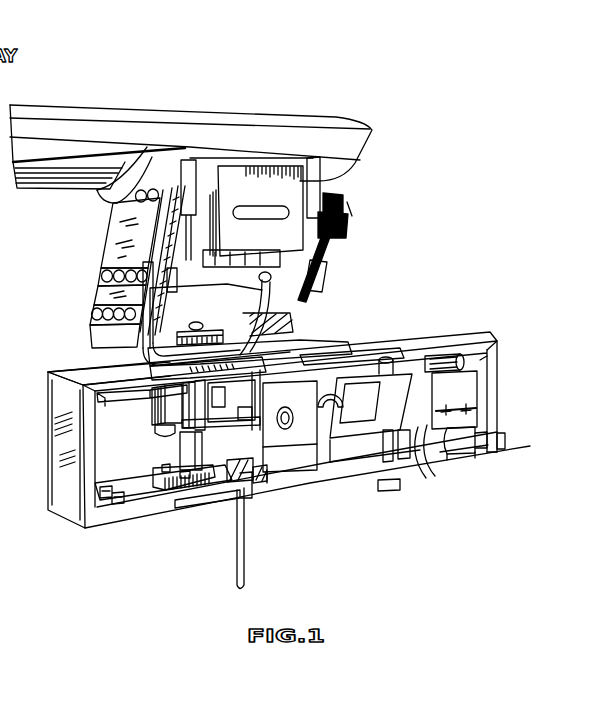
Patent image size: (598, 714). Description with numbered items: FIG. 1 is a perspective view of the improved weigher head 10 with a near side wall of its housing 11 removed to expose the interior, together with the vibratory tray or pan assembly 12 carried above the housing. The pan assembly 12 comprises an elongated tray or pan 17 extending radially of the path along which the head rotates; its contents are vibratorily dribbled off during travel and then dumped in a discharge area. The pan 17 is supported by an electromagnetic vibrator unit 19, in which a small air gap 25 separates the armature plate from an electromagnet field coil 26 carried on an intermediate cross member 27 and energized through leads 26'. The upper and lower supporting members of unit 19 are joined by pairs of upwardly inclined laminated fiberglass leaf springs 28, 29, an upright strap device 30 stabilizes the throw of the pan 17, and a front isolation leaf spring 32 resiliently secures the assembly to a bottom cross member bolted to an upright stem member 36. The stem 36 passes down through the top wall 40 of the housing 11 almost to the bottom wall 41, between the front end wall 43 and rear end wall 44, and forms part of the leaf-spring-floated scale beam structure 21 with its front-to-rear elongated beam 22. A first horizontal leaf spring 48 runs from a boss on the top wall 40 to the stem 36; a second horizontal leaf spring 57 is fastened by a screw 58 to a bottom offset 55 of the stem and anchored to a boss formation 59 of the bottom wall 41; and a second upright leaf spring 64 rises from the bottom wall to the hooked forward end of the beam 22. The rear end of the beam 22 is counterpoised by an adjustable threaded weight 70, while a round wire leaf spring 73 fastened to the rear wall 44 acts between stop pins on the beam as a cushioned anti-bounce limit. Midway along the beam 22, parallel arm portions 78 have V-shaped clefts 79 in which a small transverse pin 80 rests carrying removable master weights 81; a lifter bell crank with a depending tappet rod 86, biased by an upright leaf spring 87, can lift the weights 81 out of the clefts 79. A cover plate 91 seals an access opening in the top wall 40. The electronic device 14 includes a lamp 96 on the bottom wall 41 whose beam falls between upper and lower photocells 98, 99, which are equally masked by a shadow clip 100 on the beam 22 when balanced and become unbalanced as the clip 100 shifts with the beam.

The weigher head 10 is at (40, 338).
The housing 11 is at (45, 445).
The vibratory tray or pan assembly 12 is at (360, 223).
The electronic device 14 is at (452, 462).
The tray or pan 17 is at (117, 110).
The electromagnetic vibrator unit 19 is at (196, 296).
The scale beam structure 21 is at (360, 450).
The beam 22 is at (335, 442).
The air gap 25 is at (262, 207).
The electromagnet field coil 26 is at (336, 207).
The leads 26' is at (295, 313).
The intermediate cross member 27 is at (206, 316).
The laminated fiberglass leaf springs 28 is at (182, 243).
The laminated fiberglass leaf springs 29 is at (323, 248).
The upright strap device 30 is at (123, 222).
The front isolation leaf spring 32 is at (116, 298).
The upright stem member 36 is at (180, 449).
The top wall 40 is at (97, 370).
The bottom wall 41 is at (298, 492).
The front end wall 43 is at (60, 505).
The rear end wall 44 is at (493, 418).
The first horizontal leaf spring 48 is at (143, 395).
The bottom offset 55 is at (187, 492).
The second horizontal leaf spring 57 is at (157, 497).
The screw 58 is at (160, 478).
The internal boss formation 59 is at (128, 523).
The second upright leaf spring 64 is at (232, 492).
The counterpoise weight 70 is at (462, 362).
The wire leaf spring 73 is at (451, 410).
The arm portions 78 is at (376, 352).
The V-shaped cleft 79 is at (352, 398).
The transverse pin 80 is at (347, 404).
The removable weights 81 is at (350, 347).
The tappet rod 86 is at (236, 560).
The upright leaf spring 87 is at (320, 402).
The cover plate 91 is at (340, 347).
The lamp 96 is at (404, 460).
The upper photocell 98 is at (507, 434).
The lower photocell 99 is at (492, 451).
The shadow clip 100 is at (443, 457).